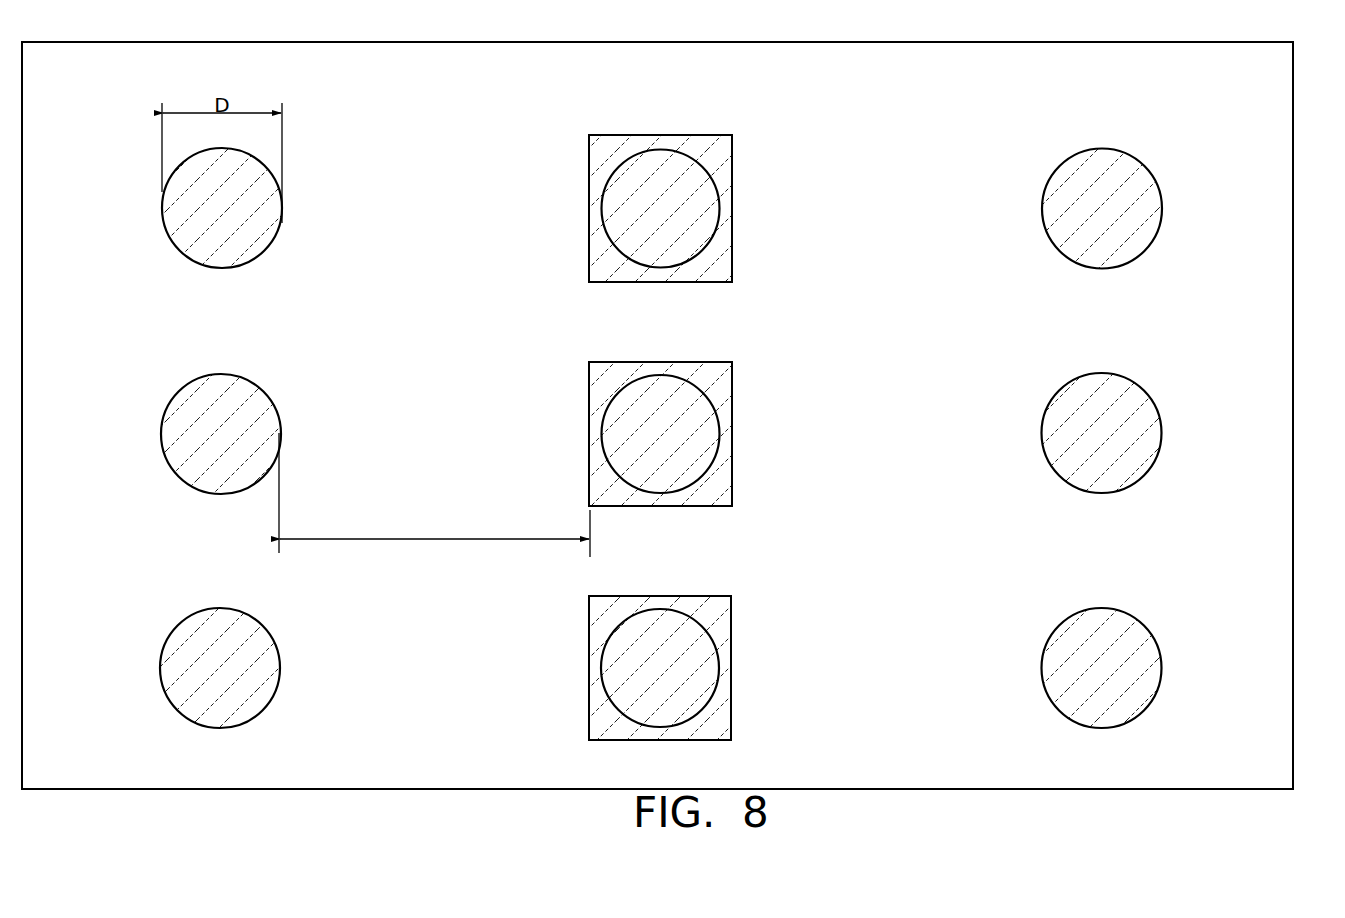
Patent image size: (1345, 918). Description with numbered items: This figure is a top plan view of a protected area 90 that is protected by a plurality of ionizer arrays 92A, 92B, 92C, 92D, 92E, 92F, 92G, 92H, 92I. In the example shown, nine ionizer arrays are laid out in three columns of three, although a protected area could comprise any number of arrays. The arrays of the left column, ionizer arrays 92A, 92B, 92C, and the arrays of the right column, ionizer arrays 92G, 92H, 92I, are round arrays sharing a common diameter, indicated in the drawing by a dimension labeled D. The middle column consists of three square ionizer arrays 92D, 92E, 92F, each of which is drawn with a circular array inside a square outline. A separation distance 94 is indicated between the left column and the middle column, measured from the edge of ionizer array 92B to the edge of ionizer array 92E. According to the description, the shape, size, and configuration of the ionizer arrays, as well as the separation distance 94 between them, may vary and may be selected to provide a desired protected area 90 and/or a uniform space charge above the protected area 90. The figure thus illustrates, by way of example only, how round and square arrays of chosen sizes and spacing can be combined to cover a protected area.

The protected area 90 is at (1301, 179).
The ionizer array 92A is at (162, 235).
The ionizer array 92B is at (162, 458).
The ionizer array 92C is at (161, 692).
The ionizer array 92D is at (746, 243).
The ionizer array 92E is at (744, 468).
The ionizer array 92F is at (745, 702).
The ionizer array 92G is at (1168, 200).
The ionizer array 92H is at (1168, 425).
The ionizer array 92I is at (1168, 660).
The separation distance 94 is at (442, 540).